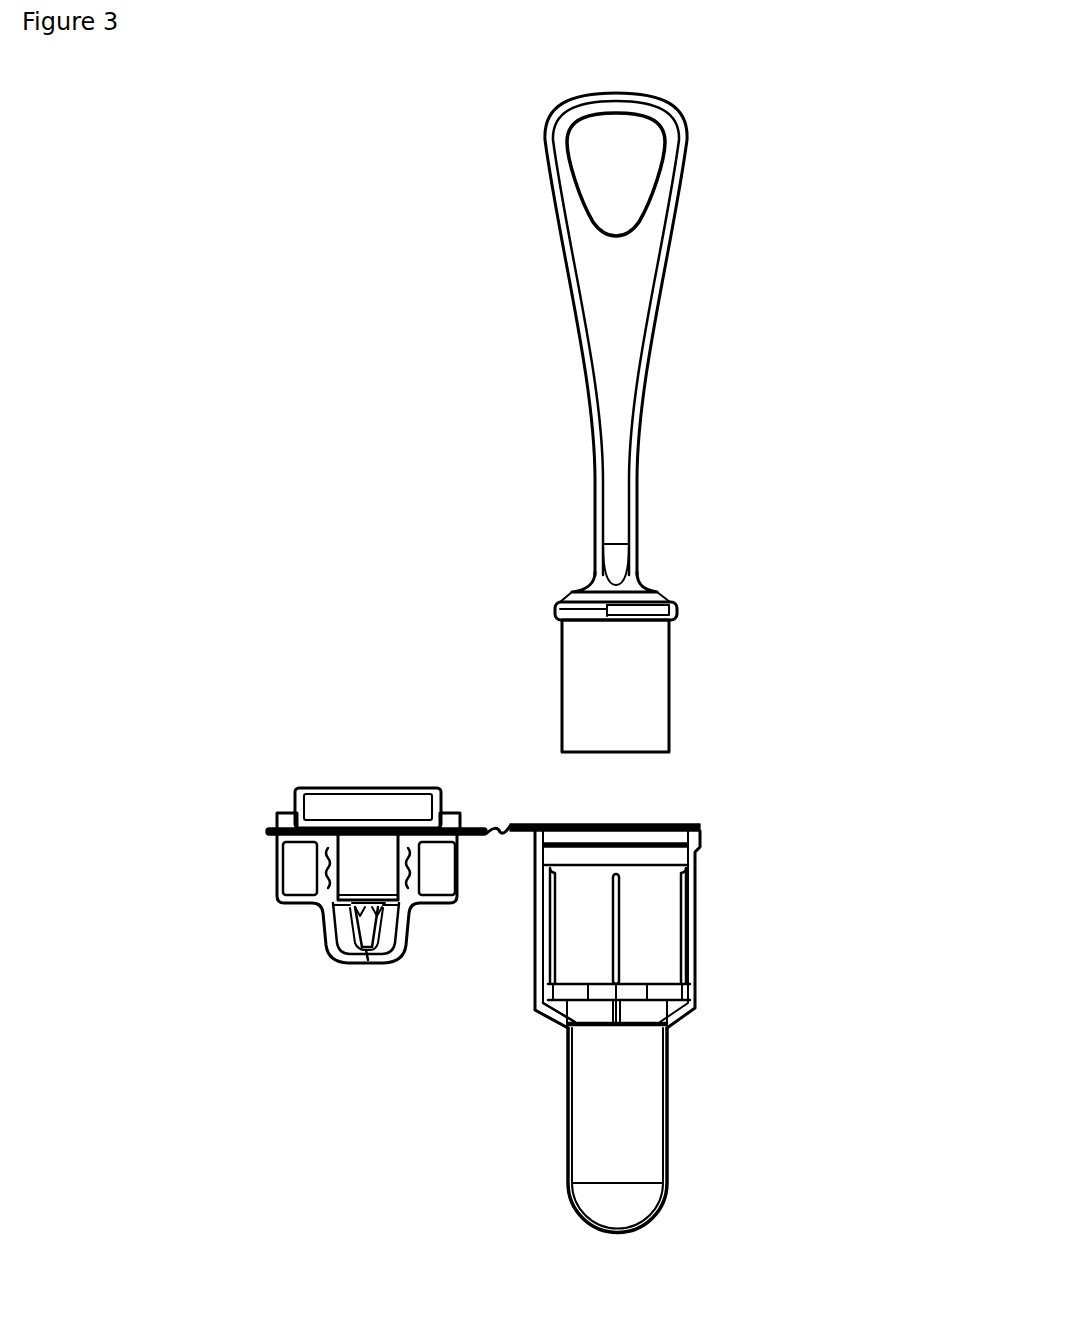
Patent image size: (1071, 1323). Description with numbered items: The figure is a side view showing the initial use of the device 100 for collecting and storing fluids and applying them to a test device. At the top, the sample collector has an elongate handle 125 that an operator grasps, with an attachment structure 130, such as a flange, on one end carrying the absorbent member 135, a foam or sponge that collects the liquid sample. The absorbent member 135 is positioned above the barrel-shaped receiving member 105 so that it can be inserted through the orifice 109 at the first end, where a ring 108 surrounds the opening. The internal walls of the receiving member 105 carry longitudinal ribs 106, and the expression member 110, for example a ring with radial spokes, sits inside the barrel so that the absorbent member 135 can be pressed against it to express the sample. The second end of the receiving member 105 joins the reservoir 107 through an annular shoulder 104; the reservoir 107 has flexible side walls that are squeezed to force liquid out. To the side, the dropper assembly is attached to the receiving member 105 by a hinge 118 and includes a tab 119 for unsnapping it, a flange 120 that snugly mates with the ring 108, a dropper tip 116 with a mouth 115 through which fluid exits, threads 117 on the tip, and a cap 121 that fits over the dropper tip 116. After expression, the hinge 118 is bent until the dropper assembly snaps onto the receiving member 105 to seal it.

The device 100 is at (320, 303).
The annular shoulder 104 is at (548, 1005).
The receiving member 105 is at (700, 935).
The longitudinal ribs 106 is at (685, 890).
The reservoir 107 is at (667, 1122).
The ring 108 is at (705, 823).
The orifice 109 is at (582, 878).
The expression member 110 is at (660, 997).
The mouth 115 is at (368, 953).
The dropper tip 116 is at (355, 927).
The threads 117 is at (330, 858).
The hinge 118 is at (487, 830).
The tab 119 is at (265, 826).
The flange 120 is at (380, 803).
The cap 121 is at (325, 955).
The handle 125 is at (628, 277).
The attachment structure 130 is at (668, 598).
The absorbent member 135 is at (647, 690).